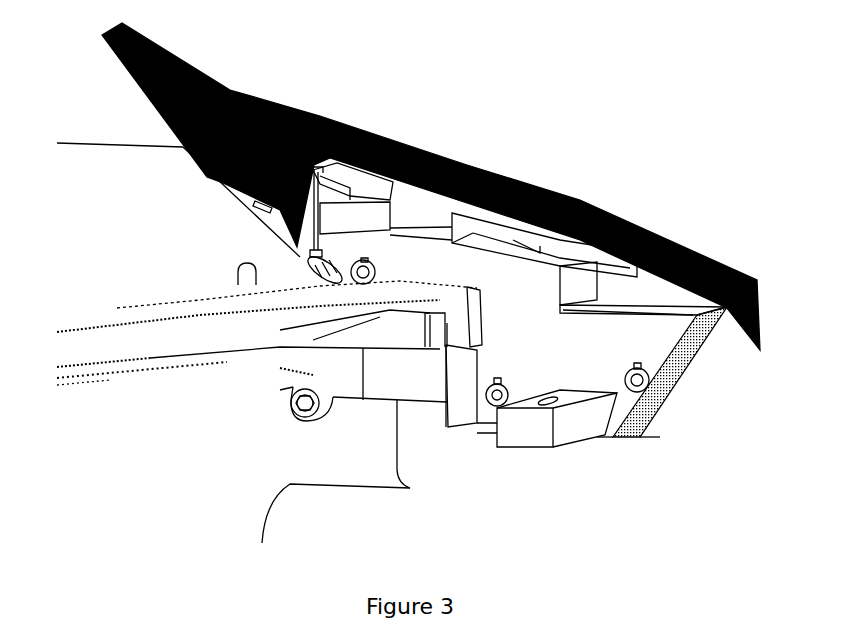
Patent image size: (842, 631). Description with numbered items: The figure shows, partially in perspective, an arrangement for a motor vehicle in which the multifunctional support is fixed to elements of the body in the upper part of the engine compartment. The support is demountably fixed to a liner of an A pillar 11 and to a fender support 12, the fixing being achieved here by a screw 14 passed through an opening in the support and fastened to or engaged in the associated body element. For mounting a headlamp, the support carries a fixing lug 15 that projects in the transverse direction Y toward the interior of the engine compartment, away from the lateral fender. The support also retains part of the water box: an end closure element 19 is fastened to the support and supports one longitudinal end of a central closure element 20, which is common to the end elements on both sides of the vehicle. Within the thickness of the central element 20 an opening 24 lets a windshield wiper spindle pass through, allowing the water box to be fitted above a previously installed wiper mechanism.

The A pillar 11 is at (337, 468).
The fender support 12 is at (665, 465).
The screw 14 is at (290, 400).
The fixing lug 15 is at (580, 412).
The end closure element 19 is at (467, 335).
The central closure element 20 is at (173, 323).
The opening 24 is at (348, 262).